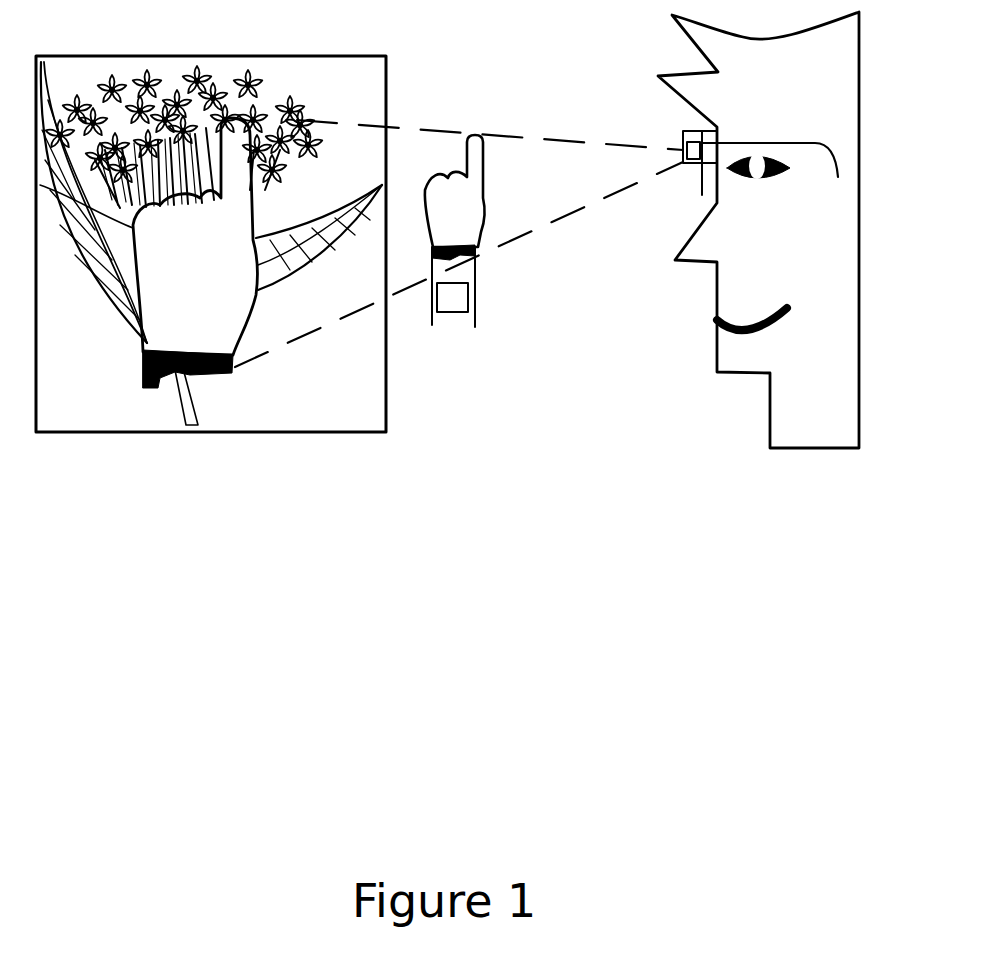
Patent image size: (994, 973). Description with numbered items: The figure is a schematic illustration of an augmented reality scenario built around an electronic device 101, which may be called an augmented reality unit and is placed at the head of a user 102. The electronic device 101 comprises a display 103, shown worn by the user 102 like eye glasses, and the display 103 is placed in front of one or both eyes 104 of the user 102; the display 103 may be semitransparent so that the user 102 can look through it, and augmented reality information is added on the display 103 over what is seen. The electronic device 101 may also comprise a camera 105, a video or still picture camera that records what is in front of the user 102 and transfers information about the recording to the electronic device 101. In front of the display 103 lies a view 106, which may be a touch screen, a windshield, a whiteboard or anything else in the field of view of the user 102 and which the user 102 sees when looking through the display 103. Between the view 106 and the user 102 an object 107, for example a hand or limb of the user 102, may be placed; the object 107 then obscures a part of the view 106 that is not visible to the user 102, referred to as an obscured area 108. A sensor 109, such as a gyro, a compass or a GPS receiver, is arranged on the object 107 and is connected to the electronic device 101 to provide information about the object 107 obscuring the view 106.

The electronic device 101 is at (706, 120).
The user 102 is at (807, 448).
The display 103 is at (700, 175).
The eyes 104 is at (767, 187).
The camera 105 is at (688, 150).
The view 106 is at (65, 433).
The object 107 is at (472, 200).
The obscured area 108 is at (210, 315).
The sensor 109 is at (447, 300).